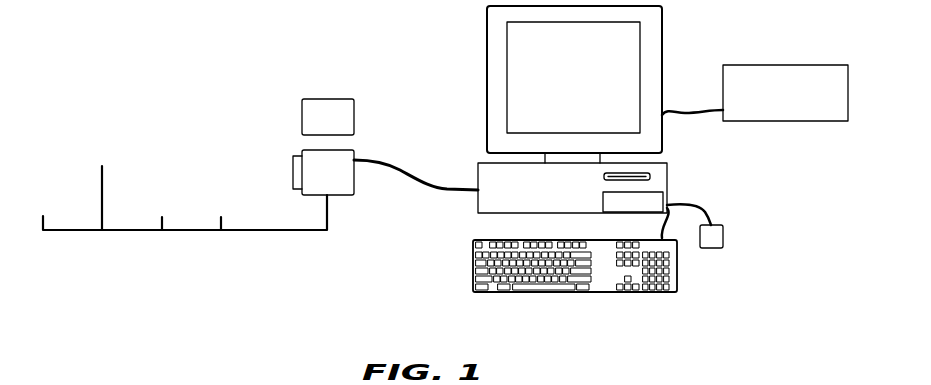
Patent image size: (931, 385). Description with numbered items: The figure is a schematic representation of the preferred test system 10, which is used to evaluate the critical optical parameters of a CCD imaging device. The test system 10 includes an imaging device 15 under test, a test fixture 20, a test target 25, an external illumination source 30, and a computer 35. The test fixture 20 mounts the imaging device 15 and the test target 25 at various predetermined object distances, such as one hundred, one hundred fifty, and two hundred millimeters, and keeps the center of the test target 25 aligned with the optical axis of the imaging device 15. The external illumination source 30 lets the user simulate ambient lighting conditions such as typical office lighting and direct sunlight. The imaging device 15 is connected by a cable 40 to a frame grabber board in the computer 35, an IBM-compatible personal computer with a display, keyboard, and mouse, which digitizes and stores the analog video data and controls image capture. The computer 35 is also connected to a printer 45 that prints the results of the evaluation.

The test system 10 is at (222, 50).
The imaging device 15 is at (342, 190).
The test fixture 20 is at (247, 231).
The test target 25 is at (104, 172).
The external illumination source 30 is at (354, 122).
The computer 35 is at (668, 163).
The cable 40 is at (427, 188).
The printer 45 is at (745, 73).